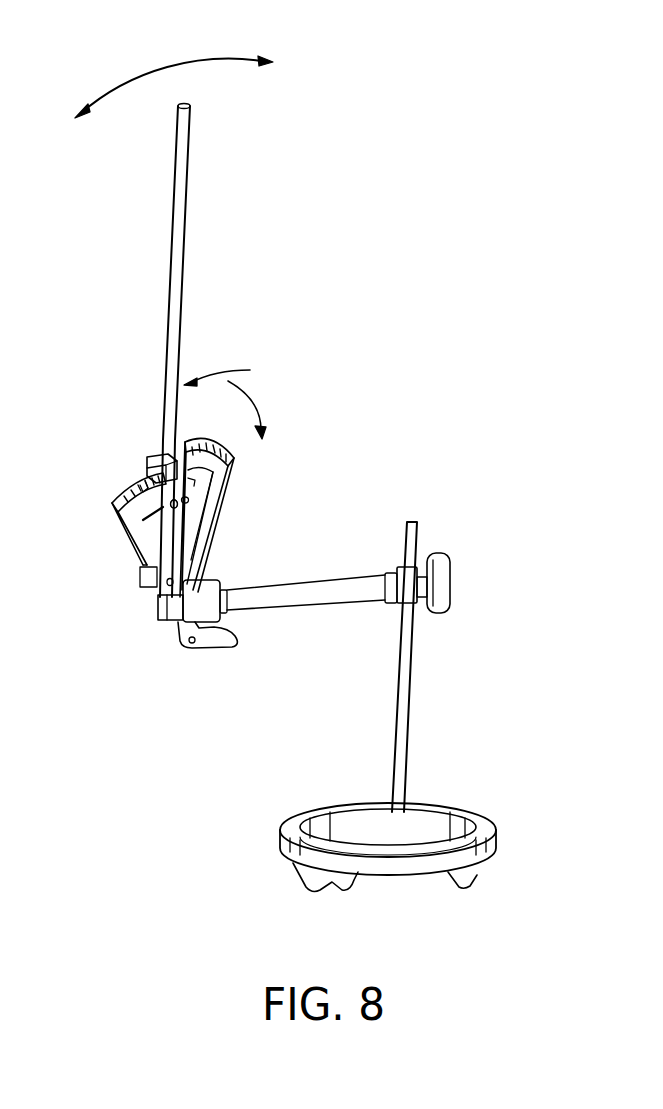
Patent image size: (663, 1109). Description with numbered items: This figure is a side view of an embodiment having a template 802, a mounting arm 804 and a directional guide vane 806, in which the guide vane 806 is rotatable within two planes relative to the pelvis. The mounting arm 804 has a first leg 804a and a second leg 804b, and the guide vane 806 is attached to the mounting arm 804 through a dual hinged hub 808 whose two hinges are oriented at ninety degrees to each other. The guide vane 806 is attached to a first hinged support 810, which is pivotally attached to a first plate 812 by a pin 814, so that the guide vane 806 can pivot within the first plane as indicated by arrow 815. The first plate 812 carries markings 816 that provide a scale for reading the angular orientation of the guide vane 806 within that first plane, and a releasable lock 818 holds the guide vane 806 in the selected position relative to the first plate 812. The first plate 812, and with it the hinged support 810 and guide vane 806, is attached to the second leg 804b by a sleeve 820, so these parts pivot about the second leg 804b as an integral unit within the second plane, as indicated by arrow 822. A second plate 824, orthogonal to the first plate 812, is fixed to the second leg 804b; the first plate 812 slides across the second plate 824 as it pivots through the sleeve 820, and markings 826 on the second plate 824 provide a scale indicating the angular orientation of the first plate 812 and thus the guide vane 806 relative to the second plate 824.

The template 802 is at (470, 812).
The mounting arm 804 is at (430, 660).
The first leg 804a is at (407, 722).
The second leg 804b is at (335, 577).
The directional guide vane 806 is at (181, 220).
The dual hinged hub 808 is at (158, 617).
The first hinged support 810 is at (150, 460).
The first plate 812 is at (127, 478).
The pin 814 is at (158, 585).
The arrow 815 is at (198, 60).
The markings 816 is at (122, 520).
The releasable lock 818 is at (178, 506).
The sleeve 820 is at (210, 582).
The arrow 822 is at (237, 397).
The second plate 824 is at (233, 505).
The markings 826 is at (182, 440).